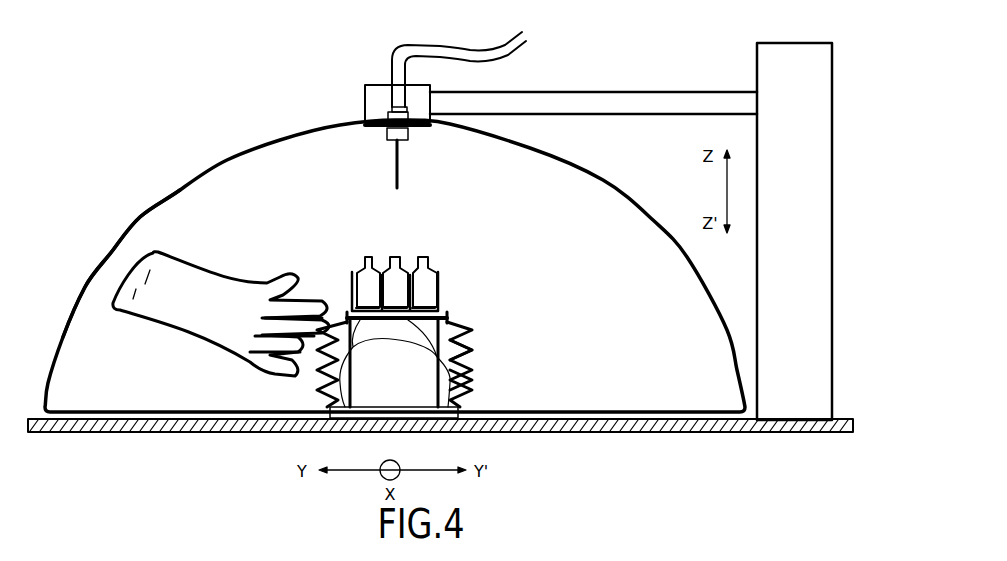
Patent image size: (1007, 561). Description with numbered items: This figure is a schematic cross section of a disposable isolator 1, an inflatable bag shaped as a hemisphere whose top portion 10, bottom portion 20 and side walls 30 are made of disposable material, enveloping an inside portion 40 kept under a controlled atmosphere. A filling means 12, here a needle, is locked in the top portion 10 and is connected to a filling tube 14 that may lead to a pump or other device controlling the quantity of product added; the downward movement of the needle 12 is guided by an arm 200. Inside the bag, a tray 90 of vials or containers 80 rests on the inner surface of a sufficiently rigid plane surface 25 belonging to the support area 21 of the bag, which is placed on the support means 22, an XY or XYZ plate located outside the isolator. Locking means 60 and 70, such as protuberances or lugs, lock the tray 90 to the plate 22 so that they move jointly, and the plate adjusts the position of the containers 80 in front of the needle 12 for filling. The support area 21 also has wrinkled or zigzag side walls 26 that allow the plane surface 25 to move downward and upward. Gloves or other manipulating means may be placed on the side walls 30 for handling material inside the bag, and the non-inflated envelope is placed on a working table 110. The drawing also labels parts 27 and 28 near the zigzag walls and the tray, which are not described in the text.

The disposable isolator 1 is at (179, 112).
The top portion 10 is at (272, 130).
The filling means 12 is at (373, 97).
The filling tube 14 is at (465, 52).
The bottom portion 20 is at (36, 391).
The support area 21 is at (480, 409).
The support means 22 is at (380, 383).
The plane surface 25 is at (472, 350).
The zigzag side walls 26 is at (473, 382).
The left bellows 27 is at (320, 383).
The container holder 28 is at (366, 305).
The side walls 30 is at (135, 216).
The inside portion 40 is at (490, 247).
The locking means 60 is at (454, 333).
The locking means 70 is at (445, 313).
The container 80 is at (424, 257).
The tray 90 is at (442, 284).
The working table 110 is at (208, 283).
The arm 200 is at (603, 93).